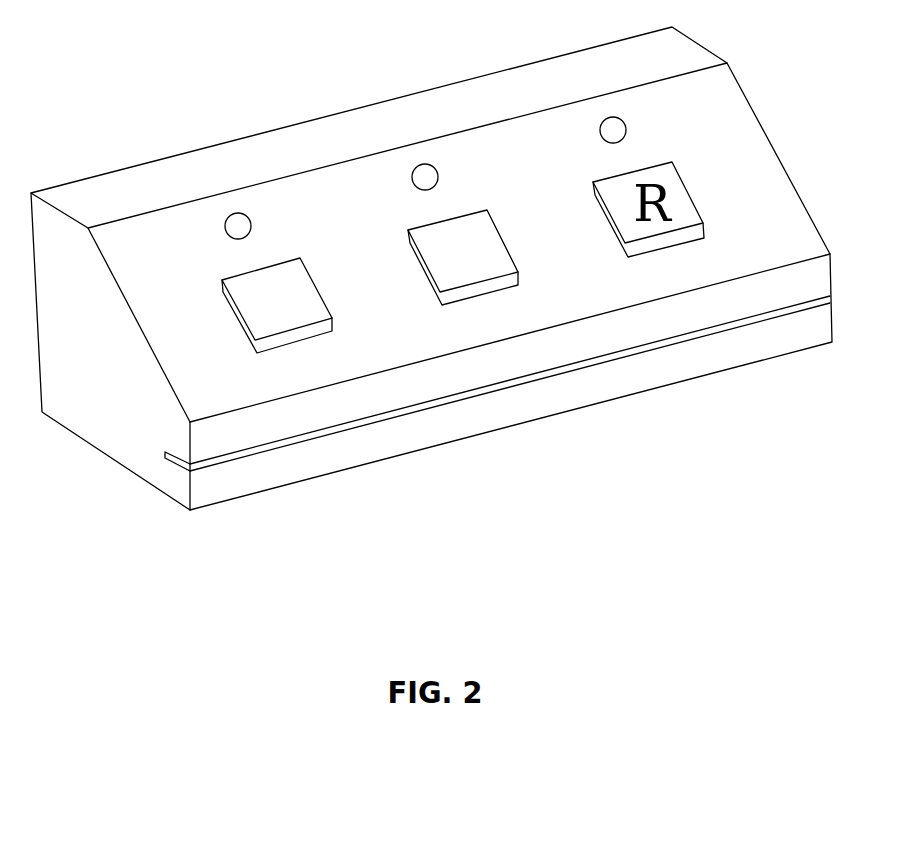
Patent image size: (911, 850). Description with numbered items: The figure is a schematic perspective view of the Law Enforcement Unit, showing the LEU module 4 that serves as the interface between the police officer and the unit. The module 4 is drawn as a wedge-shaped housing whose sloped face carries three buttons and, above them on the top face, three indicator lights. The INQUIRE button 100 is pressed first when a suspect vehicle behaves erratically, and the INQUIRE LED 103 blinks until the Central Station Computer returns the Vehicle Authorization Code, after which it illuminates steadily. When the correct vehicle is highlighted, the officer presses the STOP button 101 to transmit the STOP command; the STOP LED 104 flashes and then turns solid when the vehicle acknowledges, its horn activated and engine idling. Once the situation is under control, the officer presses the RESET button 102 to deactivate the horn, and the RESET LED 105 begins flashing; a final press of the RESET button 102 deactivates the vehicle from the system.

The LEU module 4 is at (108, 456).
The INQUIRE button 100 is at (308, 335).
The STOP button 101 is at (500, 288).
The RESET button 102 is at (685, 242).
The INQUIRE LED 103 is at (239, 213).
The STOP LED 104 is at (425, 164).
The RESET LED 105 is at (604, 119).